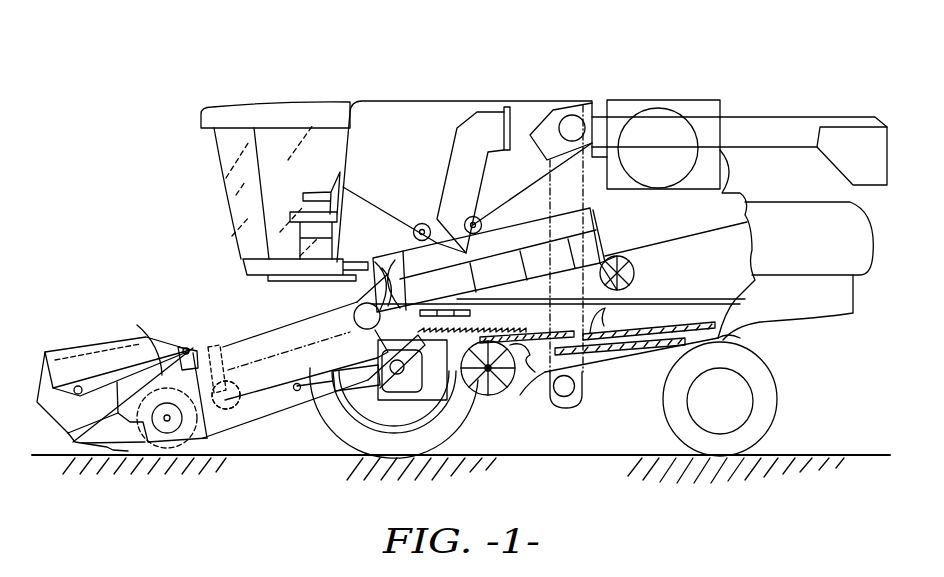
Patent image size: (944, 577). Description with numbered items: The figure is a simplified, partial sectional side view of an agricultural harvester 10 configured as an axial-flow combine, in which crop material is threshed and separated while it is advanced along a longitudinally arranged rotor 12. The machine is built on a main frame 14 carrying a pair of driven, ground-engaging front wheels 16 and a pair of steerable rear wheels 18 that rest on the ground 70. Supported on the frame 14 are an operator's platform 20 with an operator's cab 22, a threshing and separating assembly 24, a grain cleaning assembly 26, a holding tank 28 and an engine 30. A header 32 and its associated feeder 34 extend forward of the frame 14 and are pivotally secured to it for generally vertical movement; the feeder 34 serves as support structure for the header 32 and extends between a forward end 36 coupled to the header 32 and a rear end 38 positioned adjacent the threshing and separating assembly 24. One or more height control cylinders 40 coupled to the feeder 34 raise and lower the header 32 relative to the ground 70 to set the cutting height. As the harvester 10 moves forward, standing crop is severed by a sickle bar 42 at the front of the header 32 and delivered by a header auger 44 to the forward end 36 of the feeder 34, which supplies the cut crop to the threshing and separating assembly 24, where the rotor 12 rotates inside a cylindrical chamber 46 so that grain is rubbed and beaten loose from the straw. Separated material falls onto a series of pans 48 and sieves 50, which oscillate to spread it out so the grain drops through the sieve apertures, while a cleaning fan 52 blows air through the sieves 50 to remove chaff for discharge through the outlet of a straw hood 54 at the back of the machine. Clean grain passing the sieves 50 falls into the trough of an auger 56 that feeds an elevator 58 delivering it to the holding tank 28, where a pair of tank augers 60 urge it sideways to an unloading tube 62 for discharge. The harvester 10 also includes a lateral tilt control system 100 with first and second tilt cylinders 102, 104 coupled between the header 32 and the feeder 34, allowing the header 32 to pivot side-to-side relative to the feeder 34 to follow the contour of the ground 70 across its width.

The agricultural harvester 10 is at (234, 58).
The rotor 12 is at (392, 256).
The main frame 14 is at (742, 338).
The front wheels 16 is at (348, 425).
The rear wheels 18 is at (772, 408).
The operator's platform 20 is at (246, 268).
The operator's cab 22 is at (236, 195).
The threshing and separating assembly 24 is at (507, 253).
The grain cleaning assembly 26 is at (542, 408).
The holding tank 28 is at (418, 101).
The engine 30 is at (655, 100).
The header 32 is at (67, 331).
The feeder 34 is at (229, 331).
The forward end 36 is at (140, 338).
The rear end 38 is at (352, 290).
The height control cylinders 40 is at (345, 395).
The sickle bar 42 is at (74, 452).
The header auger 44 is at (162, 442).
The cylindrical chamber 46 is at (522, 233).
The pans 48 is at (498, 331).
The sieves 50 is at (599, 330).
The cleaning fan 52 is at (483, 398).
The straw hood 54 is at (870, 252).
The auger 56 is at (568, 400).
The elevator 58 is at (590, 183).
The tank augers 60 is at (422, 223).
The unloading tube 62 is at (770, 128).
The ground 70 is at (56, 455).
The lateral tilt control system 100 is at (246, 422).
The first tilt cylinder 102 is at (233, 420).
The second tilt cylinder 104 is at (226, 395).